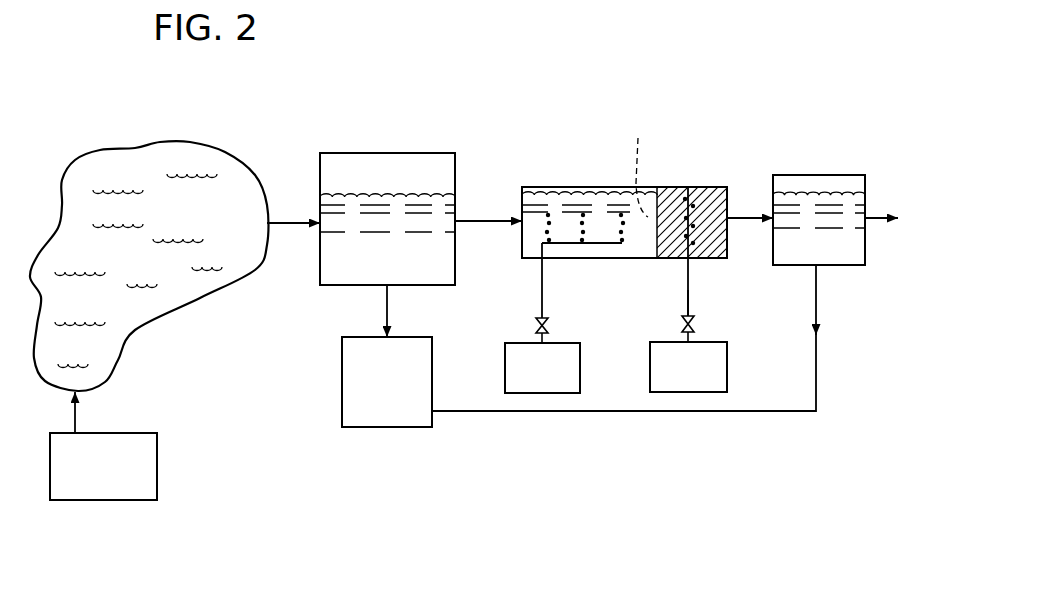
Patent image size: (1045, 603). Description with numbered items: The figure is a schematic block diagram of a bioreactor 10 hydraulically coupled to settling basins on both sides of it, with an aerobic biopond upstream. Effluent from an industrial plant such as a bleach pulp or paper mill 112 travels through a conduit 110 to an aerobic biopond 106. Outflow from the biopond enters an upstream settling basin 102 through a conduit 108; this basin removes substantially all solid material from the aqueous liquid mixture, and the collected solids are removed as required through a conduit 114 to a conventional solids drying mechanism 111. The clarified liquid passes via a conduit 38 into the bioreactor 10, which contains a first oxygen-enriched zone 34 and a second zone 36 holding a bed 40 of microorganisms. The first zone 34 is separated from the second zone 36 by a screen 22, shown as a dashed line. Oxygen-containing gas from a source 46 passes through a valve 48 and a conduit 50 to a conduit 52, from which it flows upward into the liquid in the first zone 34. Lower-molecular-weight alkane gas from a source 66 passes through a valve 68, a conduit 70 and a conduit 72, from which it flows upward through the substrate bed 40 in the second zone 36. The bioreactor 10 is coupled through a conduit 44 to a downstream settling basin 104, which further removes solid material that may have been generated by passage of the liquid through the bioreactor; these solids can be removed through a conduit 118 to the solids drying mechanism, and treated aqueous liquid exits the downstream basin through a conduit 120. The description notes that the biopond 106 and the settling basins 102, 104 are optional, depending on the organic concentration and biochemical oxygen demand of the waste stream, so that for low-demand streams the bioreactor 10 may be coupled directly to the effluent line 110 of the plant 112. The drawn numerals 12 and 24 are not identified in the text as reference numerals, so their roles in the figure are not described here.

The bioreactor 10 is at (552, 142).
The reactor vessel 12 is at (583, 185).
The screen 22 is at (640, 166).
The partition 24 is at (663, 185).
The bed of microorganisms 40 is at (710, 188).
The first oxygen-enriched zone 34 is at (607, 250).
The second zone 36 is at (713, 257).
The conduit 38 is at (475, 217).
The conduit 44 is at (738, 222).
The source of oxygen-containing gas 46 is at (505, 365).
The valve 48 is at (550, 326).
The conduit 50 is at (542, 283).
The conduit 52 is at (562, 243).
The source of lower-molecular-weight alkane gas 66 is at (650, 367).
The valve 68 is at (697, 324).
The conduit 70 is at (685, 293).
The conduit 72 is at (684, 260).
The upstream settling basin 102 is at (403, 150).
The downstream settling basin 104 is at (818, 173).
The aerobic biopond 106 is at (192, 292).
The conduit 108 is at (283, 228).
The conduit 110 is at (78, 423).
The solids drying mechanism 111 is at (338, 385).
The bleach pulp or paper mill 112 is at (157, 457).
The conduit 114 is at (388, 303).
The conduit 118 is at (817, 303).
The conduit 120 is at (870, 222).